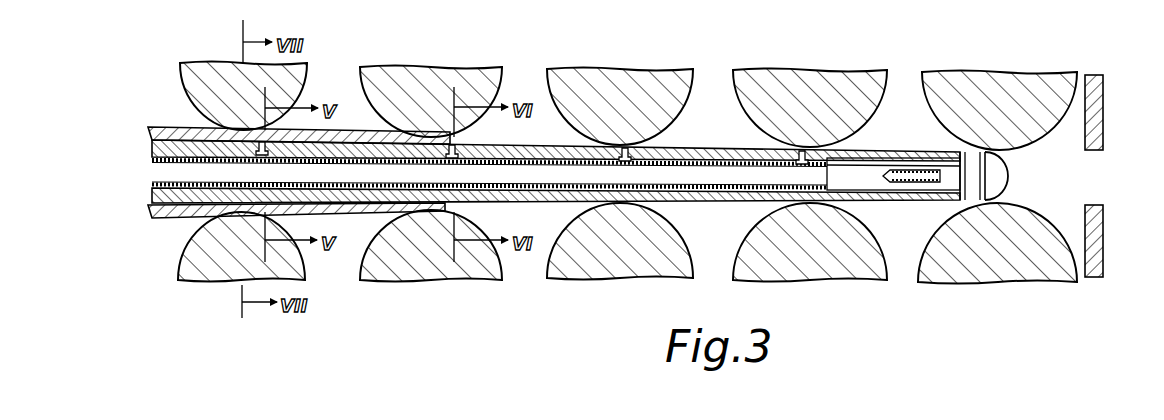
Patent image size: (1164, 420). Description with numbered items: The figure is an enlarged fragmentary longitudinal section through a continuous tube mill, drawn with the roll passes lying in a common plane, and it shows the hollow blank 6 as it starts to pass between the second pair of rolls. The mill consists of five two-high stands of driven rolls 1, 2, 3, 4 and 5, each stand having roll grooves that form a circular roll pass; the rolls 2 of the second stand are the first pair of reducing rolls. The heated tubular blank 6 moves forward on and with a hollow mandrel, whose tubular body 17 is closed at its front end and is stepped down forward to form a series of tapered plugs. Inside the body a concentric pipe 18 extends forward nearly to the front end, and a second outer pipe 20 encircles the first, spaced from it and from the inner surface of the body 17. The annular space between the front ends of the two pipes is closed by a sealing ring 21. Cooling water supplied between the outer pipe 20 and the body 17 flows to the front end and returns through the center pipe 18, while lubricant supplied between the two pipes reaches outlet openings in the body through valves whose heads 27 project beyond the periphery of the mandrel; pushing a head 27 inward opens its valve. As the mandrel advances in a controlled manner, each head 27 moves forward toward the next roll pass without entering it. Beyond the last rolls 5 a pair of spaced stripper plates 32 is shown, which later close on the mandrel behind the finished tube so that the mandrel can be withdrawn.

The rolls of the first stand 1 is at (207, 70).
The rolls of the second stand 2 is at (448, 73).
The rolls of the third stand 3 is at (652, 72).
The rolls of the fourth stand 4 is at (830, 76).
The rolls of the fifth stand 5 is at (1013, 76).
The hollow blank 6 is at (165, 128).
The tubular body 17 is at (152, 150).
The concentric pipe 18 is at (160, 172).
The outer pipe 20 is at (152, 186).
The sealing ring 21 is at (835, 194).
The valve head 27 is at (455, 143).
The stripper plates 32 is at (1104, 133).